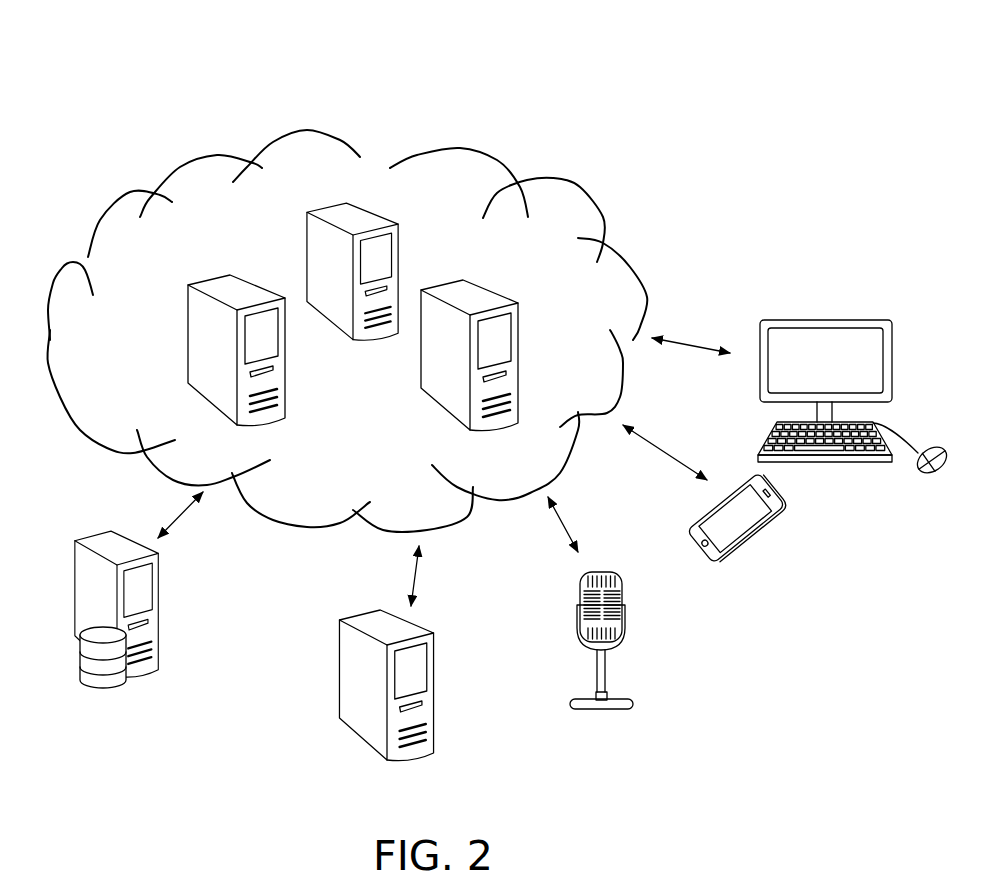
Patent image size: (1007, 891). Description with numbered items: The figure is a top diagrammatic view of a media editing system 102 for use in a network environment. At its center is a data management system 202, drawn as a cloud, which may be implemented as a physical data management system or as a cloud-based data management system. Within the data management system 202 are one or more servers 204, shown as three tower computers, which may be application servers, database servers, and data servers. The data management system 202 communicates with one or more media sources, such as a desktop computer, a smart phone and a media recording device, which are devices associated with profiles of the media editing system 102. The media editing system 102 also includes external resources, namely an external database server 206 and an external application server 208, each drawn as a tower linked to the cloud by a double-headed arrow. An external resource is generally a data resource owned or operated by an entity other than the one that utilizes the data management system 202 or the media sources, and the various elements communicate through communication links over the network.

The media editing system 102 is at (183, 72).
The data management system 202 is at (176, 158).
The servers 204 is at (278, 261).
The external database server 206 is at (116, 523).
The external application server 208 is at (345, 608).